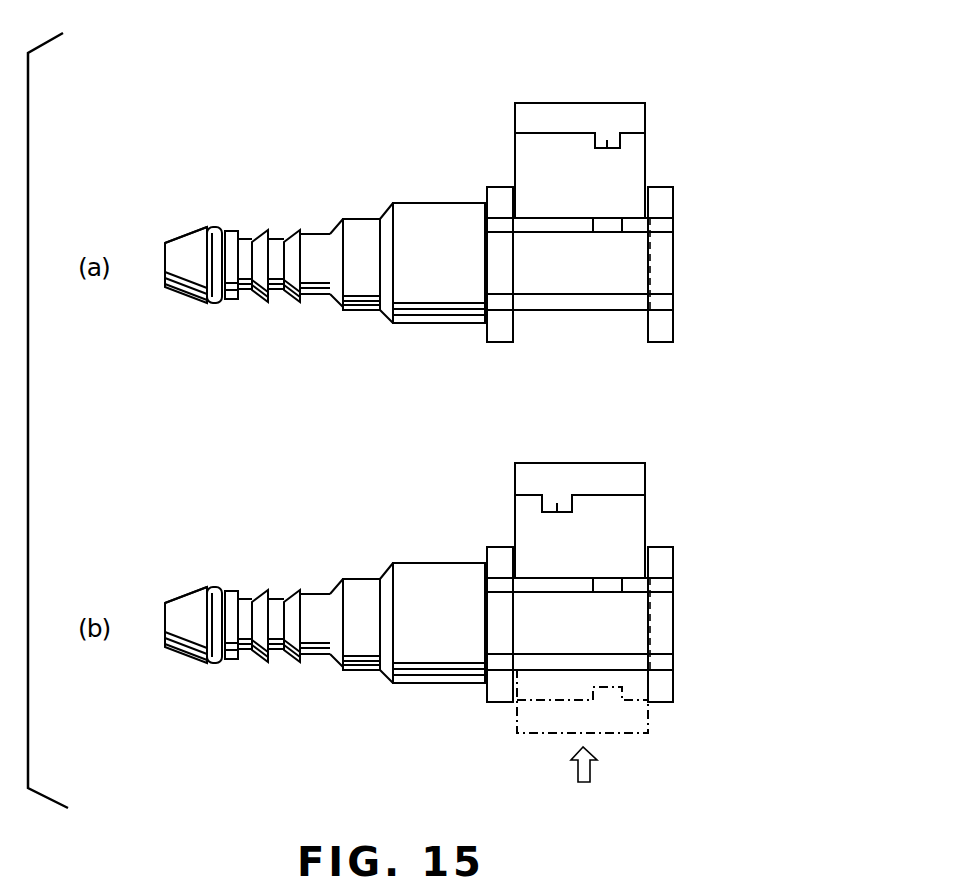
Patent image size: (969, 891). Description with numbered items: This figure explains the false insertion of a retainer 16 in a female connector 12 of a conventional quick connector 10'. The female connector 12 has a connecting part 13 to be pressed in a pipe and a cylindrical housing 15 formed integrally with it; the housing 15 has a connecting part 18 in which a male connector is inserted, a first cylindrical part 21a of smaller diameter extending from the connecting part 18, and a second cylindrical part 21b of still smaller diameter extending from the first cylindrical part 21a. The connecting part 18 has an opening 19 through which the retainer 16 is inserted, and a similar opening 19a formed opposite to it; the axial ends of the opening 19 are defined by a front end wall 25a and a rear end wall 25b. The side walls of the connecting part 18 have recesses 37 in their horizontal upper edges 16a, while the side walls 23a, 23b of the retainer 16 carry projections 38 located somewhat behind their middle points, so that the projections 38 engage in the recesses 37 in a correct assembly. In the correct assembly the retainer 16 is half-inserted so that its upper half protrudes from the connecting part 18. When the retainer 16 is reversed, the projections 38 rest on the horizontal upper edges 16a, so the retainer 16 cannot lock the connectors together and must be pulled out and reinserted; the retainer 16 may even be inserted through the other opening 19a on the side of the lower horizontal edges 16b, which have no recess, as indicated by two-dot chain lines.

The quick connector 10' is at (272, 318).
The female connector 12 is at (311, 205).
The connecting part 13 is at (245, 292).
The cylindrical housing 15 is at (412, 203).
The retainer 16 is at (690, 100).
The horizontal upper edges 16a is at (549, 222).
The lower horizontal edges 16b is at (585, 312).
The connecting part 18 is at (666, 332).
The opening 19 is at (622, 175).
The opening 19a is at (552, 316).
The first cylindrical part 21a is at (438, 326).
The second cylindrical part 21b is at (366, 313).
The side wall 23a is at (625, 207).
The side wall 23b is at (647, 412).
The front end wall 25a is at (512, 197).
The rear end wall 25b is at (648, 200).
The recess 37 is at (600, 232).
The projection 38 is at (606, 152).